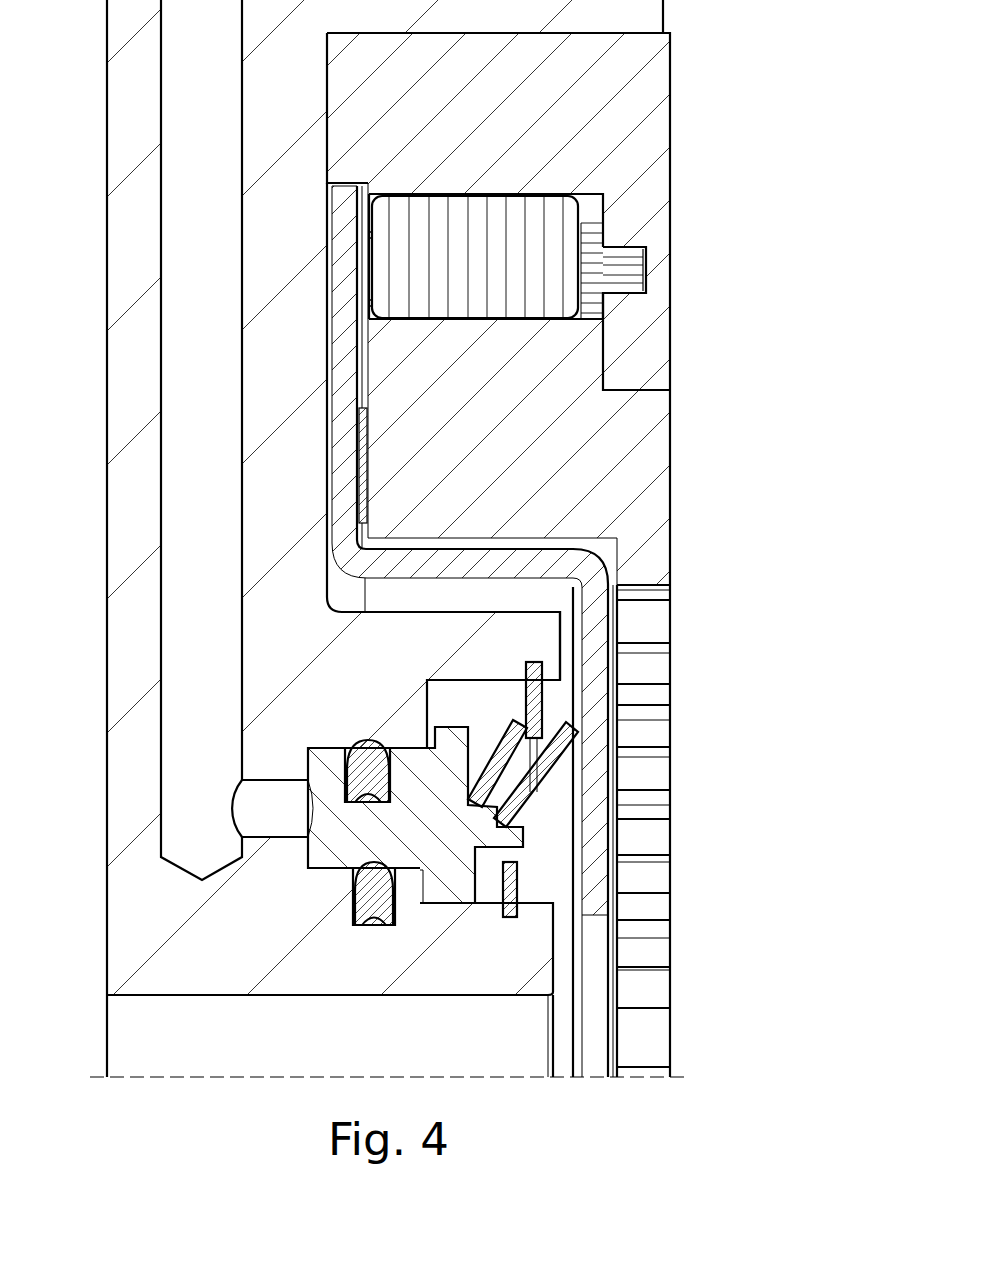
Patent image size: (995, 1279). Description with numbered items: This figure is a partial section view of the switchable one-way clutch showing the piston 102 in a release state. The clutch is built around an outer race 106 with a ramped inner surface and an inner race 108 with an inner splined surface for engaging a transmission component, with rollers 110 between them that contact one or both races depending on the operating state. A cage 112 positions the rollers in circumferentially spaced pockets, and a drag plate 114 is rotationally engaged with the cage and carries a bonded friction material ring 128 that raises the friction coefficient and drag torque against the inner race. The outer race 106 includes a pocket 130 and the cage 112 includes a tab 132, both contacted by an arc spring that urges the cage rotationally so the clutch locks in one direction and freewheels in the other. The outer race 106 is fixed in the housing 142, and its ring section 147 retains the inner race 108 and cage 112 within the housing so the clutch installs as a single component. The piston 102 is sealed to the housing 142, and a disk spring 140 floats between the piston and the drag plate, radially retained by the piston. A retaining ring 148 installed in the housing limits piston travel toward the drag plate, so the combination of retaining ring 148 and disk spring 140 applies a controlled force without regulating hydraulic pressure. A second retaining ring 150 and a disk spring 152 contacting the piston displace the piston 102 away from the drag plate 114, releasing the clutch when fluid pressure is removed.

The piston 102 is at (333, 848).
The outer race 106 is at (676, 66).
The inner race 108 is at (677, 431).
The rollers 110 is at (592, 247).
The cage 112 is at (590, 250).
The drag plate 114 is at (612, 558).
The friction material ring 128 is at (376, 465).
The pocket 130 is at (652, 273).
The tab 132 is at (613, 267).
The disk spring 140 is at (559, 764).
The housing 142 is at (372, 699).
The ring section 147 is at (657, 338).
The retaining ring 148 is at (523, 882).
The retaining ring 150 is at (553, 699).
The disk spring 152 is at (496, 731).